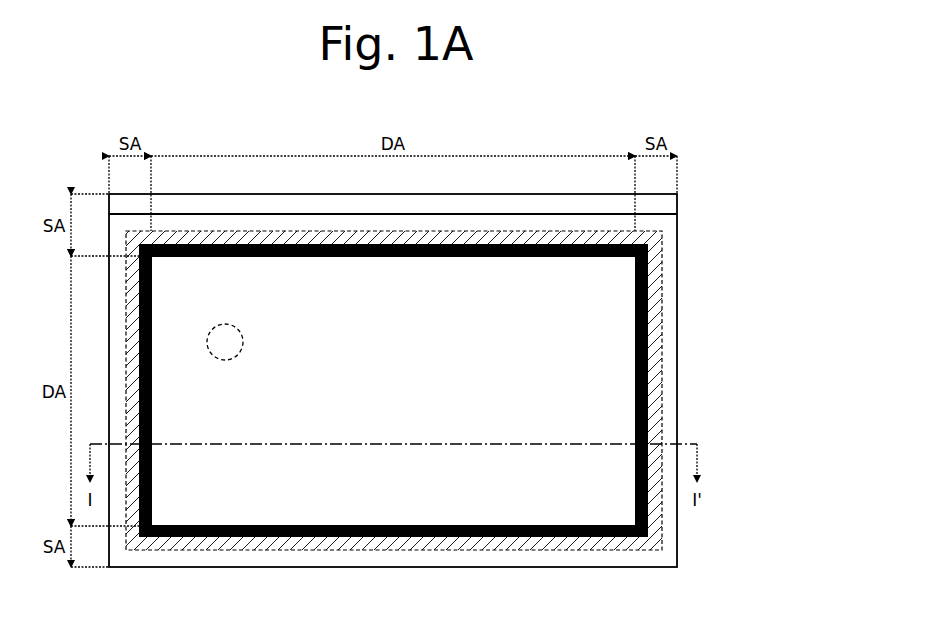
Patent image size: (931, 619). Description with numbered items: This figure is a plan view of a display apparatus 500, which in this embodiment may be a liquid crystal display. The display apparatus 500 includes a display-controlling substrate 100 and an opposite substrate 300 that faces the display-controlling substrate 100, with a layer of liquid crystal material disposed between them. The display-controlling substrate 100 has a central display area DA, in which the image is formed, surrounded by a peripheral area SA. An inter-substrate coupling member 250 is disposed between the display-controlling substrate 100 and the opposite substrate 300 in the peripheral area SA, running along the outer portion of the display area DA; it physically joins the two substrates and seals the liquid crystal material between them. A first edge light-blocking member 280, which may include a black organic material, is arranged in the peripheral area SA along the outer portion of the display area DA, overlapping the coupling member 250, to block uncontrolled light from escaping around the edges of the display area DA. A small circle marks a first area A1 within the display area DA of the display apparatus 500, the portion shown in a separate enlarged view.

The display-controlling substrate 100 is at (657, 194).
The opposite substrate 300 is at (657, 214).
The inter-substrate coupling member 250 is at (662, 284).
The first edge light-blocking member 280 is at (648, 362).
The display apparatus 500 is at (752, 167).
The first area A1 is at (243, 340).